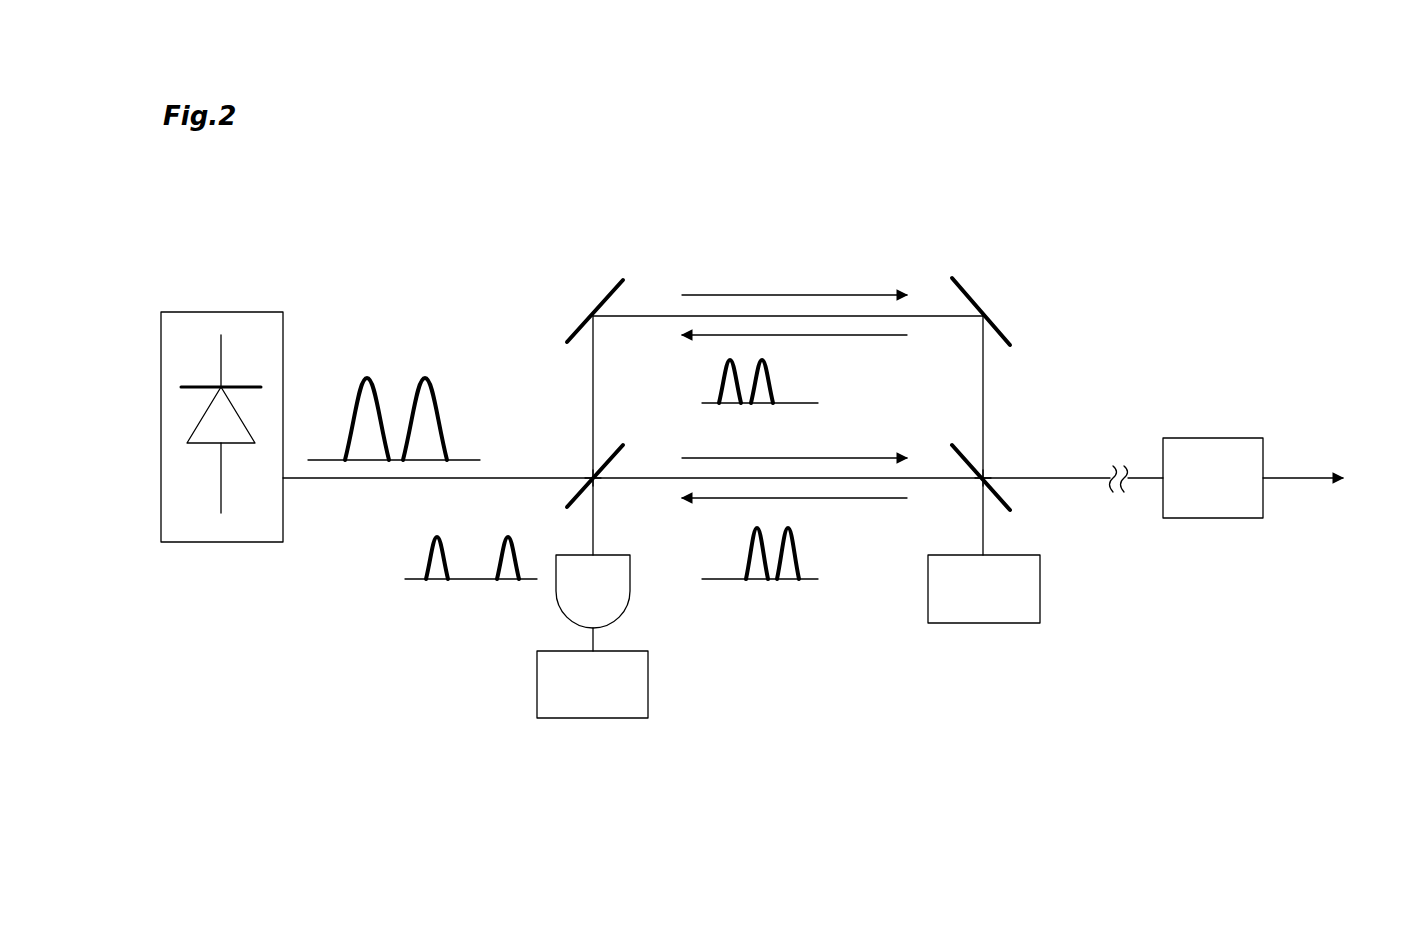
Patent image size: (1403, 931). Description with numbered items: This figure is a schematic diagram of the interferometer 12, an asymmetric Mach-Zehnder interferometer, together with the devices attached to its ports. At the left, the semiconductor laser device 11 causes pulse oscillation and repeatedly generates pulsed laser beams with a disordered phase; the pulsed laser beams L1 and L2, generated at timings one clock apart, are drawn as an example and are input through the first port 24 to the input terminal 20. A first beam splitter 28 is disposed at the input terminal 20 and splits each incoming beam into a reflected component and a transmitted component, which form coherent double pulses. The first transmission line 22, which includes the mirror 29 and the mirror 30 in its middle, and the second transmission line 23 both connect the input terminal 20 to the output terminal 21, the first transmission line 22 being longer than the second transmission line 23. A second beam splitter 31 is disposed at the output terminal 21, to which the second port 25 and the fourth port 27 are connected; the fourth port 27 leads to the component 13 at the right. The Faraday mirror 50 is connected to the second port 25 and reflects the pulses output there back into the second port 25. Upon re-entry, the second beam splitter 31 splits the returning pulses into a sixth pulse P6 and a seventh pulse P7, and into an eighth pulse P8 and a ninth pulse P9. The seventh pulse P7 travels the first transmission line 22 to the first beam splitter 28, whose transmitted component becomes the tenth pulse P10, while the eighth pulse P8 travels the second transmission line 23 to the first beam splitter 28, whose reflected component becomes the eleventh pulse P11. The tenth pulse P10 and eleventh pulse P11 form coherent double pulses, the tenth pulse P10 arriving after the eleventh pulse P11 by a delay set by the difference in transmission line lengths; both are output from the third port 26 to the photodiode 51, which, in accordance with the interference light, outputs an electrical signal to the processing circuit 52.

The semiconductor laser device 11 is at (190, 544).
The interferometer 12 is at (1038, 237).
The detection unit 13 is at (1240, 520).
The input terminal 20 is at (583, 468).
The output terminal 21 is at (993, 465).
The first transmission line 22 is at (654, 315).
The second transmission line 23 is at (641, 480).
The first port 24 is at (514, 476).
The second port 25 is at (982, 523).
The third port 26 is at (592, 528).
The fourth port 27 is at (1075, 480).
The first beam splitter 28 is at (610, 445).
The mirror 29 is at (605, 295).
The mirror 30 is at (962, 290).
The second beam splitter 31 is at (957, 445).
The Faraday mirror 50 is at (1013, 624).
The photodiode 51 is at (628, 613).
The processing circuit 52 is at (625, 719).
The pulsed laser beam L1 is at (425, 376).
The pulsed laser beam L2 is at (367, 376).
The sixth pulse P6 is at (744, 543).
The seventh pulse P7 is at (718, 367).
The eighth pulse P8 is at (800, 545).
The ninth pulse P9 is at (774, 367).
The tenth pulse P10 is at (426, 550).
The eleventh pulse P11 is at (500, 538).